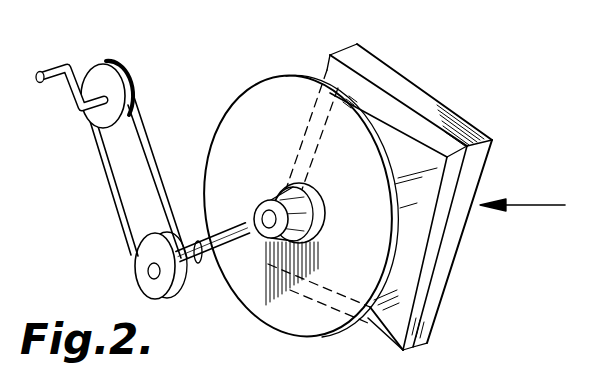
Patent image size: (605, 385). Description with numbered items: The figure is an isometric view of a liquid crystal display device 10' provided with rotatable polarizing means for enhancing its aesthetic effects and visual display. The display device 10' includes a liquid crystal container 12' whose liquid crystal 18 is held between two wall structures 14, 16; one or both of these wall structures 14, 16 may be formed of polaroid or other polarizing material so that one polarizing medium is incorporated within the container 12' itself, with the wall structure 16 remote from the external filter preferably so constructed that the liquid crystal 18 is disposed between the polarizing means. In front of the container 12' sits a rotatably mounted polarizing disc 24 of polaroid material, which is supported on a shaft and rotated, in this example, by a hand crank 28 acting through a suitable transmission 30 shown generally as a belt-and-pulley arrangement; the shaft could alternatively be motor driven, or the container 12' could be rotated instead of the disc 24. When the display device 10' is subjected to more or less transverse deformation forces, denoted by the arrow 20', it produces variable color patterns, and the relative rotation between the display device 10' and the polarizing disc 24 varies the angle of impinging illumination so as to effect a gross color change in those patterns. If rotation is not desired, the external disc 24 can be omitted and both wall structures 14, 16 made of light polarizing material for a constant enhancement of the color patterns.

The display device 10' is at (411, 83).
The liquid crystal container 12' is at (311, 99).
The wall structure 14 is at (382, 343).
The wall structure 16 is at (441, 303).
The liquid crystal 18 is at (412, 228).
The arrow 20' is at (522, 190).
The polarizing disc 24 is at (299, 332).
The hand crank 28 is at (46, 70).
The transmission 30 is at (143, 127).